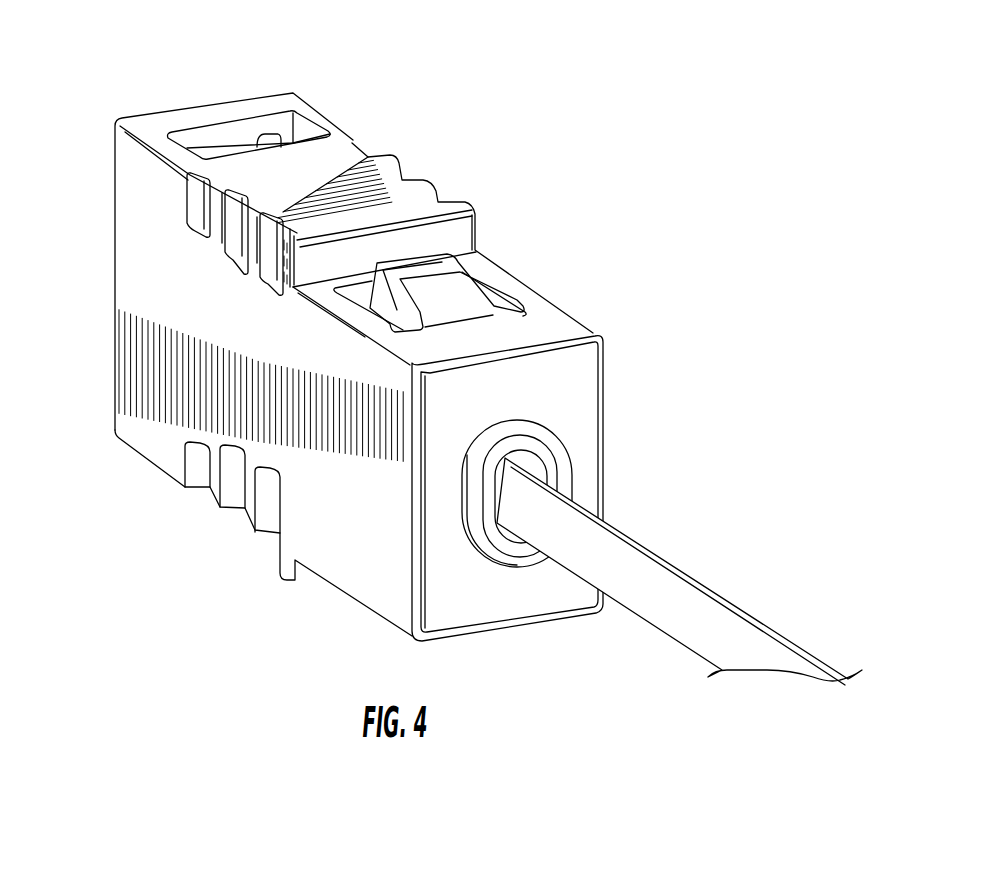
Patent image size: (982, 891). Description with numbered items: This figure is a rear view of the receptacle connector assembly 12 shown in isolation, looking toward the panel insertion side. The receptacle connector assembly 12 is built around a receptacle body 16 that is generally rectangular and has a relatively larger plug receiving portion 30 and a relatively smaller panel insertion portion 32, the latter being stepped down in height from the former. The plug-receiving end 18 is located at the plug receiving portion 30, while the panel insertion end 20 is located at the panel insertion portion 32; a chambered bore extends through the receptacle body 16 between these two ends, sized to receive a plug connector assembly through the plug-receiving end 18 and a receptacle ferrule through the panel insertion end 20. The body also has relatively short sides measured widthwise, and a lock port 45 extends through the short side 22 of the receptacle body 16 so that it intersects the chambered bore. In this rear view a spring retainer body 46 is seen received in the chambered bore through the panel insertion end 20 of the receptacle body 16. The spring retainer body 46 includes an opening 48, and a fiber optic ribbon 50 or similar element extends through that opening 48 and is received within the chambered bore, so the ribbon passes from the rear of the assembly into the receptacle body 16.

The receptacle connector assembly 12 is at (532, 130).
The receptacle body 16 is at (184, 508).
The plug-receiving end 18 is at (112, 380).
The panel insertion end 20 is at (411, 621).
The short side 22 is at (342, 147).
The plug receiving portion 30 is at (437, 150).
The panel insertion portion 32 is at (546, 280).
The lock port 45 is at (250, 130).
The spring retainer body 46 is at (619, 416).
The opening 48 is at (492, 506).
The fiber optic ribbon 50 is at (640, 563).